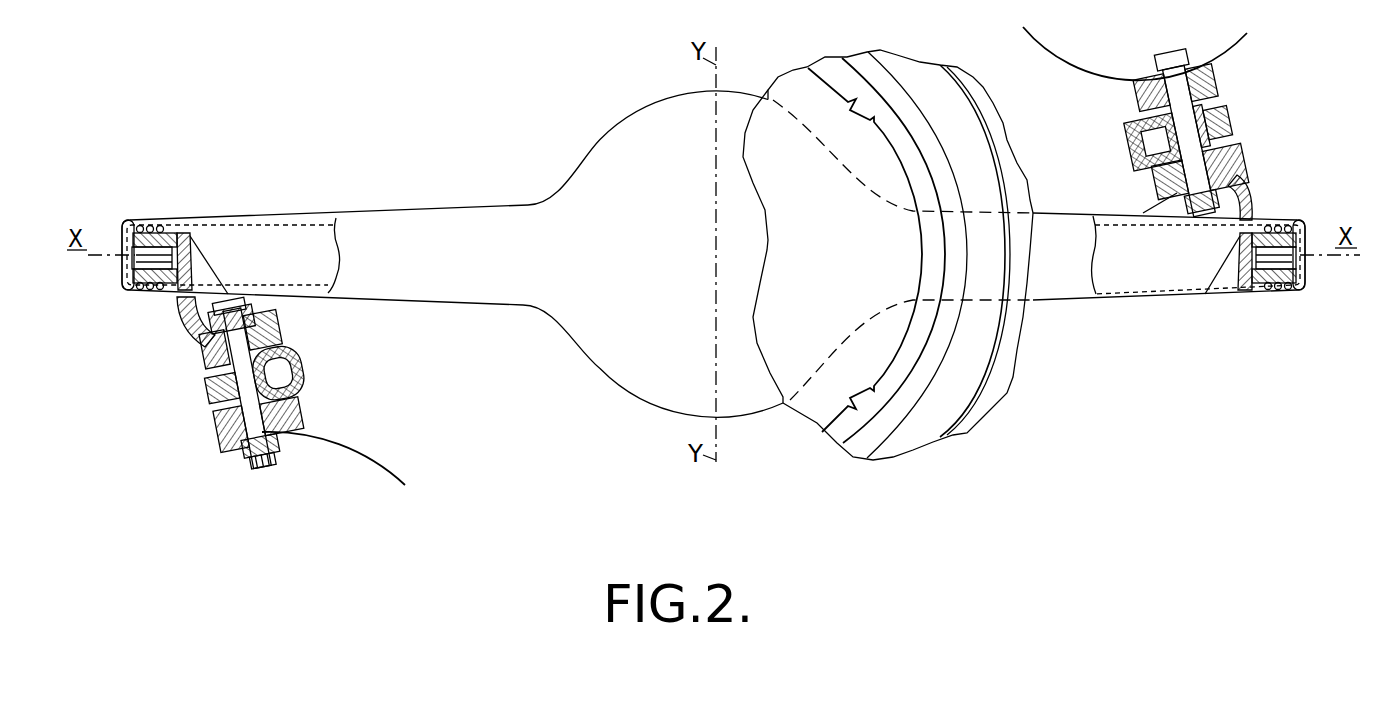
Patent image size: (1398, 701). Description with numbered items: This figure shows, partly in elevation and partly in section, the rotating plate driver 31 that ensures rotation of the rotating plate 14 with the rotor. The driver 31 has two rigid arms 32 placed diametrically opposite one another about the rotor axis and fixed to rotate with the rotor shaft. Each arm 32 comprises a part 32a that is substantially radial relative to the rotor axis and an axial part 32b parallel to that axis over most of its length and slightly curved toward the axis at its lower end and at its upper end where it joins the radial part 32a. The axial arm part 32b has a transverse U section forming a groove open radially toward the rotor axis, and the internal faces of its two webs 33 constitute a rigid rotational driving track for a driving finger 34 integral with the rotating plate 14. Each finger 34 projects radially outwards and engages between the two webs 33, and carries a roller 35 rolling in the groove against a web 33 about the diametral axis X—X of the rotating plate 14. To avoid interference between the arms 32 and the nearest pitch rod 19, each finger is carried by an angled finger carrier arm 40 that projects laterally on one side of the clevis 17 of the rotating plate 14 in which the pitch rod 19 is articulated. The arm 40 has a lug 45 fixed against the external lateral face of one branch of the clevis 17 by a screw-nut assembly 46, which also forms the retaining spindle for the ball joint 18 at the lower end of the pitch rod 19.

The rotating plate 14 is at (313, 408).
The clevis 17 is at (223, 447).
The ball joint 18 is at (225, 410).
The pitch rod 19 is at (202, 400).
The rotating plate driver 31 is at (527, 203).
The rigid arm 32 is at (1063, 302).
The radial arm part 32a is at (293, 217).
The axial arm part 32b is at (118, 277).
The web 33 is at (155, 222).
The driving finger 34 is at (203, 242).
The roller 35 is at (147, 223).
The finger carrier arm 40 is at (230, 295).
The lug 45 is at (195, 337).
The screw-nut assembly 46 is at (252, 420).